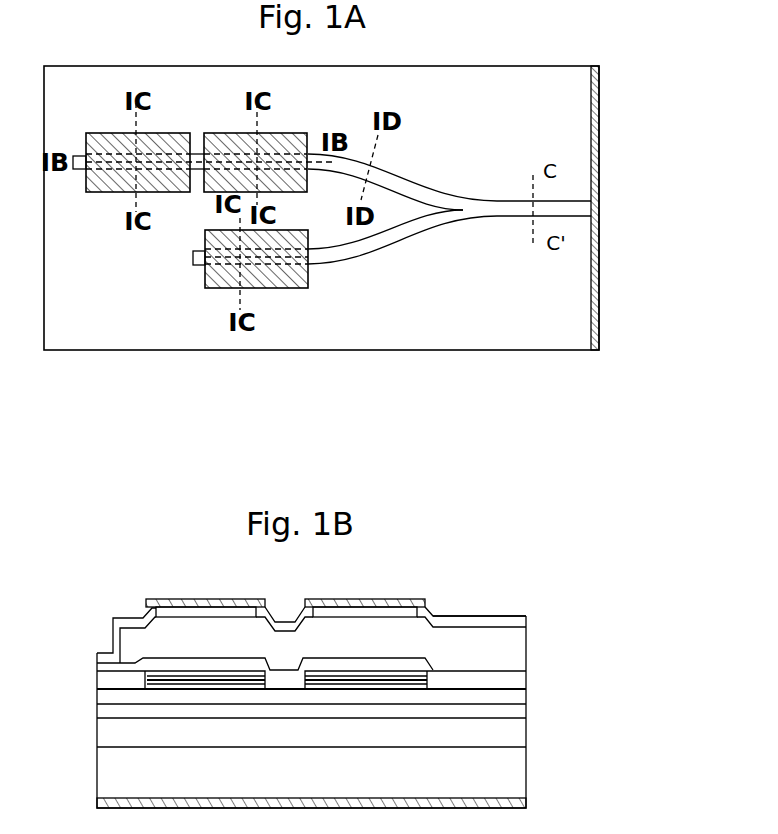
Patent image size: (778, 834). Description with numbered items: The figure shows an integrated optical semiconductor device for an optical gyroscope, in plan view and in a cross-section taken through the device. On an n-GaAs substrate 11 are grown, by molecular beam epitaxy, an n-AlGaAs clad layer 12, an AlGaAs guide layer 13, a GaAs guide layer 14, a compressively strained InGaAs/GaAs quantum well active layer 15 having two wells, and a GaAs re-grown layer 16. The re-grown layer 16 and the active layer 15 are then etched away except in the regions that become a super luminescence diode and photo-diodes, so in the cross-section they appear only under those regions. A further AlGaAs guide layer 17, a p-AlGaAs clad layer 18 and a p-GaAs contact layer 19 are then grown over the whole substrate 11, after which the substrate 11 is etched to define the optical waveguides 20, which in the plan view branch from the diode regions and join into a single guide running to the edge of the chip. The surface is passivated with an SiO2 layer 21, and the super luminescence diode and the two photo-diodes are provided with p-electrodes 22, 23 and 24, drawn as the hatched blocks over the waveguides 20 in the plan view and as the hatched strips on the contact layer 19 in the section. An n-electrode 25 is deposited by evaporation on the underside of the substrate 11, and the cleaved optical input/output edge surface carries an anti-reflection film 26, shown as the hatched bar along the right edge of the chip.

In FIG. 1B, the n-GaAs substrate 11 is at (517, 780).
In FIG. 1B, the n-AlGaAs clad layer 12 is at (517, 742).
In FIG. 1B, the AlGaAs guide layer 13 is at (517, 714).
In FIG. 1B, the GaAs guide layer 14 is at (103, 700).
In FIG. 1B, the compressively strained quantum well active layer 15 is at (97, 668).
In FIG. 1B, the GaAs re-grown layer 16 is at (438, 665).
In FIG. 1B, the AlGaAs guide layer 17 is at (517, 686).
In FIG. 1B, the p-AlGaAs clad layer 18 is at (517, 655).
In FIG. 1B, the p-GaAs contact layer 19 is at (243, 612).
In FIG. 1A, the optical waveguides 20 is at (415, 233).
In FIG. 1B, the SiO2 layer 21 is at (472, 617).
In FIG. 1A, the p-electrode 22 is at (297, 138).
In FIG. 1B, the p-electrode 22 is at (356, 600).
In FIG. 1A, the p-electrode 23 is at (165, 136).
In FIG. 1B, the p-electrode 23 is at (168, 600).
In FIG. 1A, the p-electrode 24 is at (295, 281).
In FIG. 1B, the n-electrode 25 is at (130, 799).
In FIG. 1A, the anti-reflection film 26 is at (597, 163).